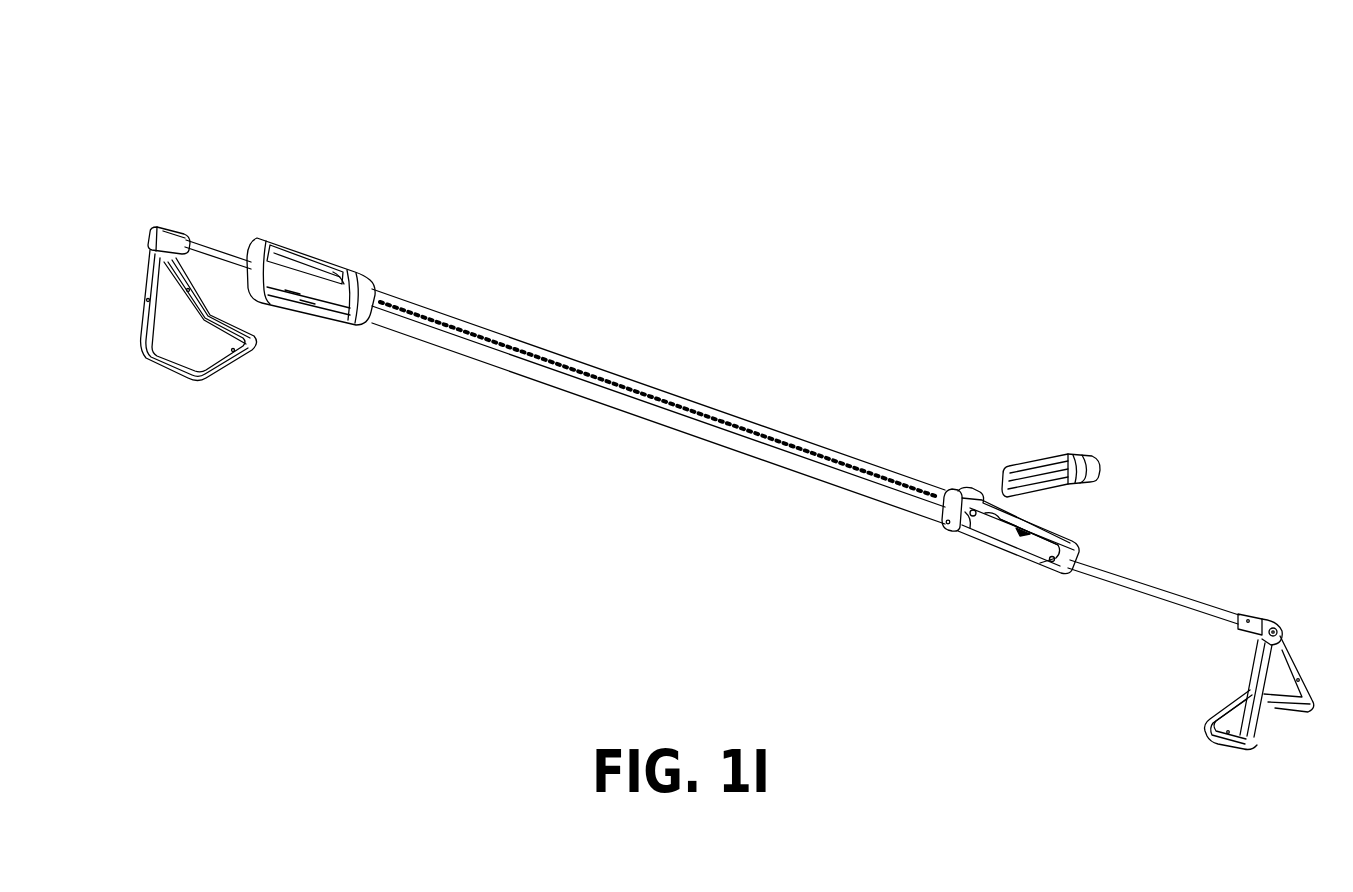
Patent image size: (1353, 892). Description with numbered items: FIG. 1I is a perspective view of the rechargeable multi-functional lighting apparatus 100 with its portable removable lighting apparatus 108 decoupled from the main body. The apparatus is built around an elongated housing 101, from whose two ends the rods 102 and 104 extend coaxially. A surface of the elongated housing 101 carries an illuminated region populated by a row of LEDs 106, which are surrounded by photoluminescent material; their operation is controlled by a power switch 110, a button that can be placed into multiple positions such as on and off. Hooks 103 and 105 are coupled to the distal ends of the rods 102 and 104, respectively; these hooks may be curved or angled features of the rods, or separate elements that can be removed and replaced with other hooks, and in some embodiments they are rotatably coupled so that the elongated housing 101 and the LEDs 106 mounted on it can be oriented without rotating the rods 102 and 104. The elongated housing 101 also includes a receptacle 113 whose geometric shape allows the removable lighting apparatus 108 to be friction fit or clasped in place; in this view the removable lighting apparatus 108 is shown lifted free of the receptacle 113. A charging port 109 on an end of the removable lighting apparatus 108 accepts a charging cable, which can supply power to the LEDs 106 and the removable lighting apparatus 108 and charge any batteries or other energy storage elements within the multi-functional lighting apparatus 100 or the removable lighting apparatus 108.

The multi-functional lighting apparatus 100 is at (196, 102).
The elongated housing 101 is at (658, 404).
The rod 102 is at (1167, 600).
The hook 103 is at (1227, 748).
The rod 104 is at (198, 243).
The hook 105 is at (195, 378).
The LEDs 106 is at (623, 378).
The removable lighting apparatus 108 is at (1071, 451).
The charging port 109 is at (1098, 457).
The power switch 110 is at (343, 272).
The receptacle 113 is at (1003, 536).